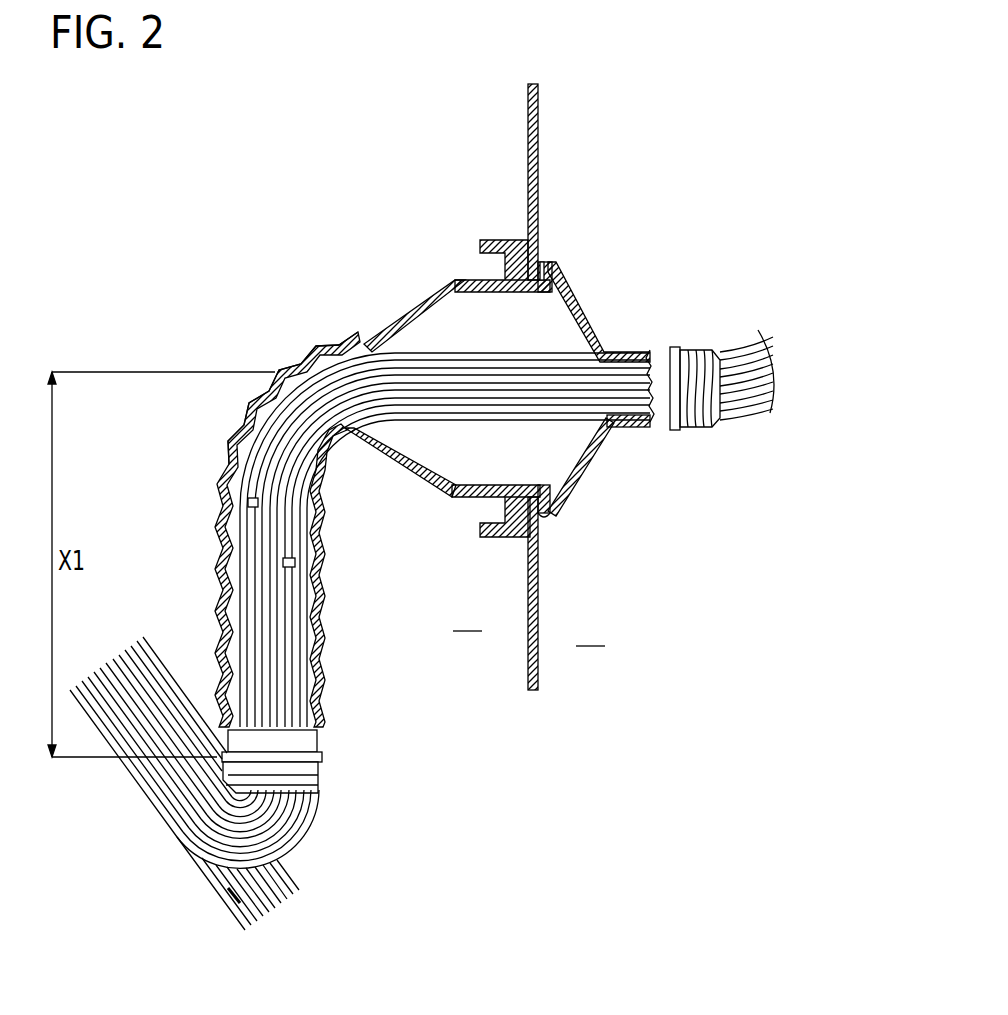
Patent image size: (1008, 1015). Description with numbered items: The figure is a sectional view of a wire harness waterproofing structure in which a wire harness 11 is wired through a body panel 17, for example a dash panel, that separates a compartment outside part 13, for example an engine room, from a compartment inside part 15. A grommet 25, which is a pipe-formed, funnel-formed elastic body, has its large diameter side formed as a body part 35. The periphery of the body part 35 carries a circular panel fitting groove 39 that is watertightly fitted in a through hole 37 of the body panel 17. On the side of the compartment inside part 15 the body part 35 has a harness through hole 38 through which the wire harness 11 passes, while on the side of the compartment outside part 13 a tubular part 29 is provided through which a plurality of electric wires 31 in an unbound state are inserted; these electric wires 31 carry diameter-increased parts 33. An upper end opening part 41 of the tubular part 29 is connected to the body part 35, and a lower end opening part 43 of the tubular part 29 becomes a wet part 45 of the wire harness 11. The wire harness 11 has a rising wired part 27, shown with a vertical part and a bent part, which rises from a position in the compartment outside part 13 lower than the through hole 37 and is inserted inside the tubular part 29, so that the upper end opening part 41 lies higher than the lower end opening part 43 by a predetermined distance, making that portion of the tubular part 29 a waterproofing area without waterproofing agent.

The wire harness 11 is at (221, 796).
The compartment outside part 13 is at (467, 616).
The compartment inside part 15 is at (590, 631).
The body panel 17 is at (540, 123).
The grommet 25 is at (559, 359).
The rising wired part 27 is at (308, 802).
The tubular part 29 is at (240, 435).
The electric wires 31 is at (497, 366).
The diameter-increased parts 33 is at (250, 502).
The body part 35 is at (590, 317).
The through hole 37 is at (545, 480).
The harness through hole 38 is at (625, 422).
The panel fitting groove 39 is at (546, 260).
The upper end opening part 41 is at (330, 368).
The lower end opening part 43 is at (305, 810).
The wet part 45 is at (232, 897).